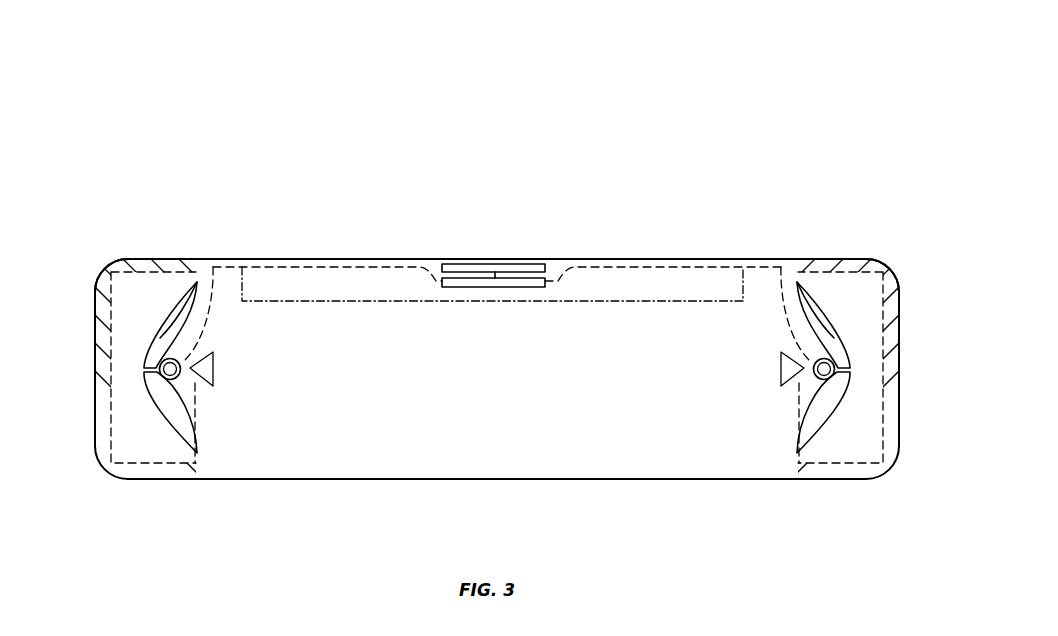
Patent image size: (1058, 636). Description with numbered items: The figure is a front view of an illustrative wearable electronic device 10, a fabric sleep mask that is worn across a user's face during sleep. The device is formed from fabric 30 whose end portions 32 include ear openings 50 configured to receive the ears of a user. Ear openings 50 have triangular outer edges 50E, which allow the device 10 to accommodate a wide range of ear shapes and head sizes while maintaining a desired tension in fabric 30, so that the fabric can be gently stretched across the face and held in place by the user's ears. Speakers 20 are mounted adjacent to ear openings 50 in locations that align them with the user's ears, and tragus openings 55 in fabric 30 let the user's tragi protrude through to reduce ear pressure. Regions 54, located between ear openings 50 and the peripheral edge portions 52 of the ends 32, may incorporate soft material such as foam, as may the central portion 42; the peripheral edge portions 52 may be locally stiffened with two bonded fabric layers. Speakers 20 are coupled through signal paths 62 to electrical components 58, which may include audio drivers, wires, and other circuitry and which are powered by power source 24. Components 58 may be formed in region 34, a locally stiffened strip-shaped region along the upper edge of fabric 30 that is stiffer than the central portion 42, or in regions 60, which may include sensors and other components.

The wearable electronic device 10 is at (718, 97).
The speakers 20 is at (159, 370).
The power source 24 is at (472, 265).
The fabric 30 is at (360, 481).
The end portions 32 is at (97, 492).
The region 34 is at (746, 290).
The central portion 42 is at (518, 455).
The ear openings 50 is at (180, 306).
The triangular outer edges 50E is at (163, 327).
The peripheral edge portions 52 is at (105, 272).
The regions 54 is at (127, 310).
The tragus openings 55 is at (213, 374).
The electrical components 58 is at (537, 283).
The regions 60 is at (243, 243).
The signal paths 62 is at (325, 268).